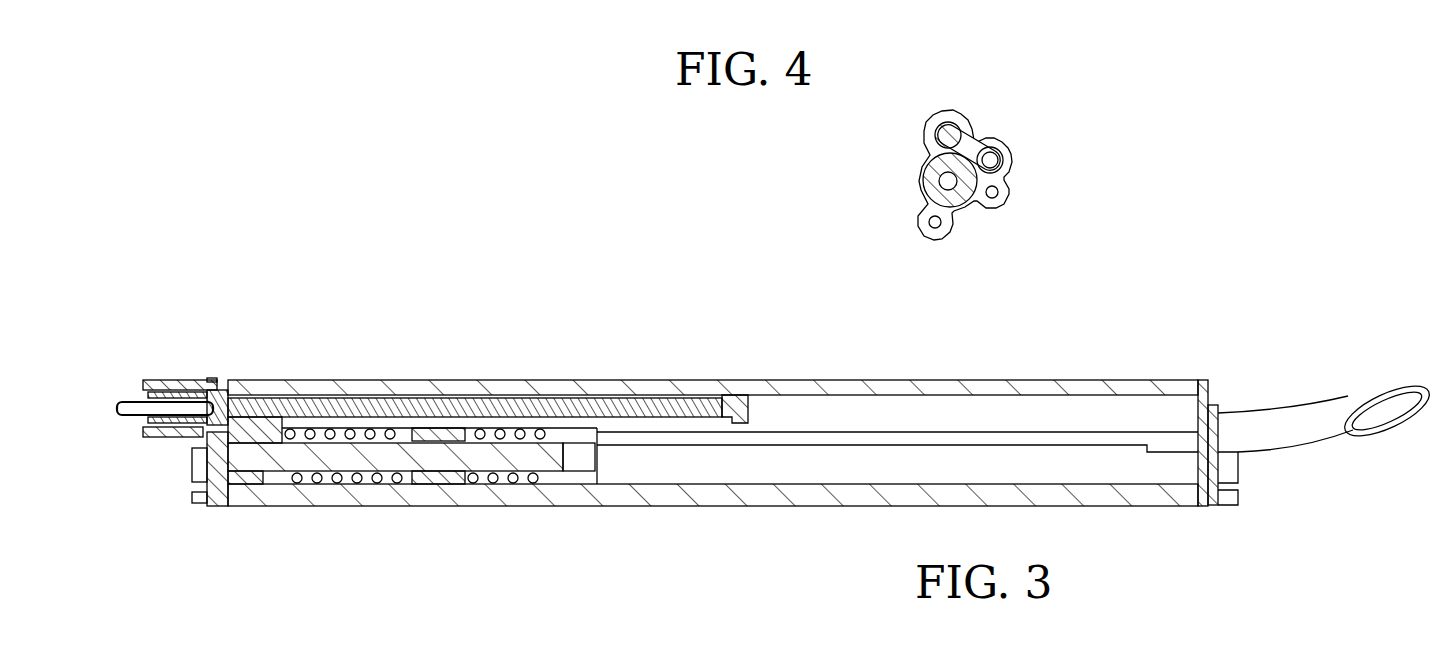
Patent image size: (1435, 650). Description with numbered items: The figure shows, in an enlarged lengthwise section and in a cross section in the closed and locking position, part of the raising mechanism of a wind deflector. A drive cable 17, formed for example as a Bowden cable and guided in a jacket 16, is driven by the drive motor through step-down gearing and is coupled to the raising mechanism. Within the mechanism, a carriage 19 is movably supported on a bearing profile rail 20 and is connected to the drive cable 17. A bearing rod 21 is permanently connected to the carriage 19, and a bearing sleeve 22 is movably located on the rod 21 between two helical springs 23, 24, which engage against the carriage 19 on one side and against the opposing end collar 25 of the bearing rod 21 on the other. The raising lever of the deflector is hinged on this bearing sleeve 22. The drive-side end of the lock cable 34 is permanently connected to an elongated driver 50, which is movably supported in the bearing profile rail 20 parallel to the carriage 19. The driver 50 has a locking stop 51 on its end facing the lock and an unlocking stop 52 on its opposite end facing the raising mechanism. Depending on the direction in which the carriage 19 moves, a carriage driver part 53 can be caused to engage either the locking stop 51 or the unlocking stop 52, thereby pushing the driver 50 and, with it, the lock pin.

In FIG. 3, the jacket 16 is at (1348, 397).
In FIG. 3, the drive cable 17 is at (1304, 453).
In FIG. 4, the drive cable 17 is at (1000, 160).
In FIG. 3, the carriage 19 is at (236, 516).
In FIG. 4, the carriage 19 is at (928, 173).
In FIG. 3, the bearing profile rail 20 is at (673, 499).
In FIG. 4, the bearing profile rail 20 is at (1018, 137).
In FIG. 3, the bearing rod 21 is at (357, 455).
In FIG. 4, the bearing rod 21 is at (960, 195).
In FIG. 3, the bearing sleeve 22 is at (435, 475).
In FIG. 3, the helical spring 23 is at (314, 474).
In FIG. 3, the helical spring 24 is at (487, 476).
In FIG. 3, the end collar 25 is at (552, 478).
In FIG. 3, the lock cable 34 is at (133, 401).
In FIG. 3, the elongated driver 50 is at (464, 350).
In FIG. 4, the elongated driver 50 is at (938, 128).
In FIG. 3, the locking stop 51 is at (205, 435).
In FIG. 3, the unlocking stop 52 is at (735, 423).
In FIG. 3, the carriage driver part 53 is at (258, 403).